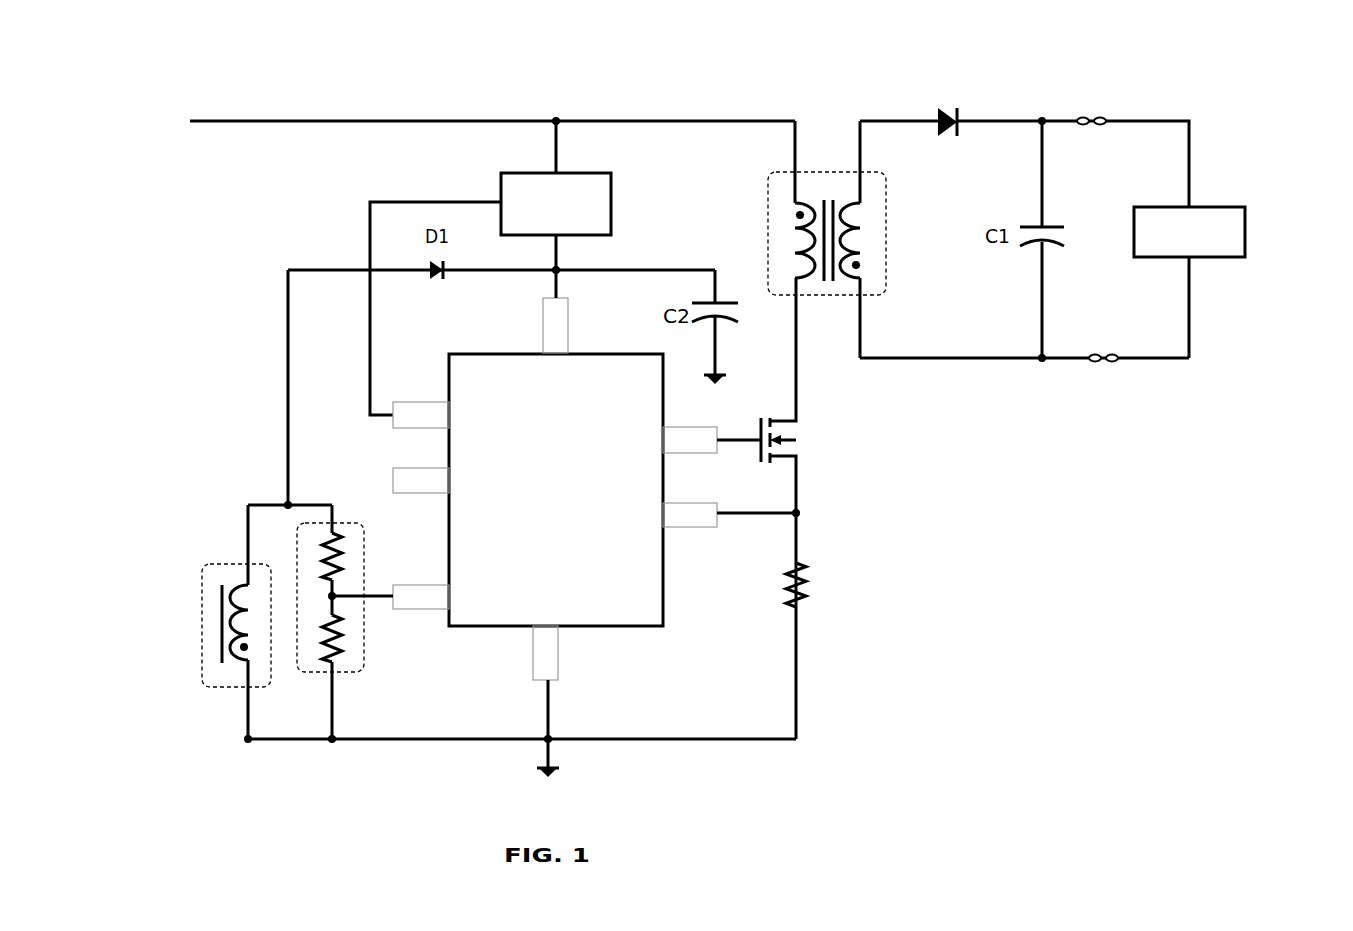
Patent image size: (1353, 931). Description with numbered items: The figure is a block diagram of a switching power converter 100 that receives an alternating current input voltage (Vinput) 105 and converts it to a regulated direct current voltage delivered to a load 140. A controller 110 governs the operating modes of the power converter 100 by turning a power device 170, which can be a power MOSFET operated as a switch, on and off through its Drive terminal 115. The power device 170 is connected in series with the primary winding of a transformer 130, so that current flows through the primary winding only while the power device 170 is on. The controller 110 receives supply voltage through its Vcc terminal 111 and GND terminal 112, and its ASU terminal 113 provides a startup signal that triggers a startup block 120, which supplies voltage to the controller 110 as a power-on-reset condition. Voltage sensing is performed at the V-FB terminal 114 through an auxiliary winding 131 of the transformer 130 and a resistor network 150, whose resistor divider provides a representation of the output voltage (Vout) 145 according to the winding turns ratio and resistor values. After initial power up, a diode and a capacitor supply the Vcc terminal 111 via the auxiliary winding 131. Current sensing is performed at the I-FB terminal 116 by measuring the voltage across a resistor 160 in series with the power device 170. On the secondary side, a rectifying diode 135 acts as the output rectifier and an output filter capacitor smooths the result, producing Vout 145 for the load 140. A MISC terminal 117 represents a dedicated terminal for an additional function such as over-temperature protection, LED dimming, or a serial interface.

The power converter 100 is at (1212, 50).
The input voltage (Vinput) 105 is at (490, 150).
The controller 110 is at (556, 490).
The Vcc terminal 111 is at (555, 311).
The GND terminal 112 is at (546, 701).
The ASU terminal 113 is at (421, 415).
The V-FB terminal 114 is at (388, 597).
The Drive terminal 115 is at (712, 440).
The I-FB terminal 116 is at (729, 515).
The MISC terminal 117 is at (421, 480).
The startup block 120 is at (490, 268).
The transformer 130 is at (831, 171).
The auxiliary winding 131 is at (192, 580).
The rectifying diode 135 is at (953, 91).
The load 140 is at (1218, 190).
The output voltage (Vout) 145 is at (1118, 229).
The resistor network 150 is at (345, 692).
The resistor 160 is at (814, 590).
The power device 170 is at (810, 432).